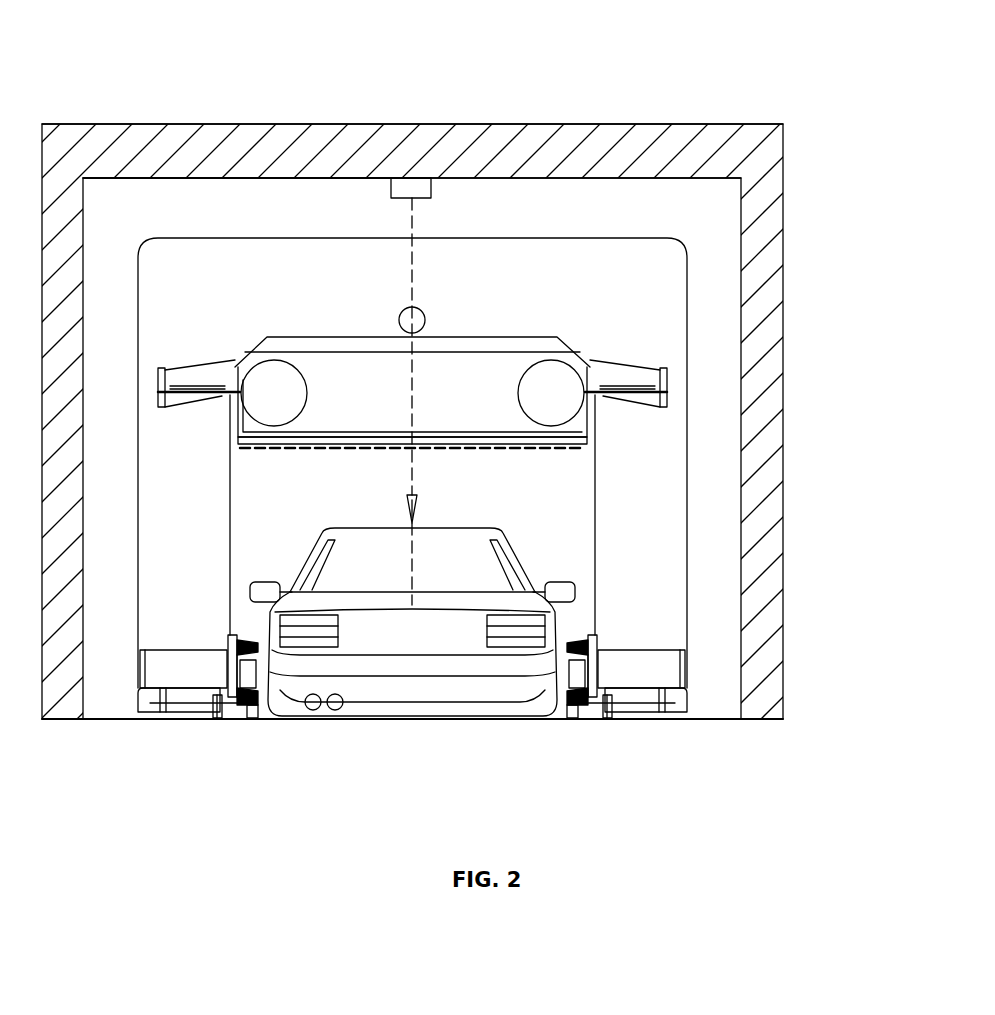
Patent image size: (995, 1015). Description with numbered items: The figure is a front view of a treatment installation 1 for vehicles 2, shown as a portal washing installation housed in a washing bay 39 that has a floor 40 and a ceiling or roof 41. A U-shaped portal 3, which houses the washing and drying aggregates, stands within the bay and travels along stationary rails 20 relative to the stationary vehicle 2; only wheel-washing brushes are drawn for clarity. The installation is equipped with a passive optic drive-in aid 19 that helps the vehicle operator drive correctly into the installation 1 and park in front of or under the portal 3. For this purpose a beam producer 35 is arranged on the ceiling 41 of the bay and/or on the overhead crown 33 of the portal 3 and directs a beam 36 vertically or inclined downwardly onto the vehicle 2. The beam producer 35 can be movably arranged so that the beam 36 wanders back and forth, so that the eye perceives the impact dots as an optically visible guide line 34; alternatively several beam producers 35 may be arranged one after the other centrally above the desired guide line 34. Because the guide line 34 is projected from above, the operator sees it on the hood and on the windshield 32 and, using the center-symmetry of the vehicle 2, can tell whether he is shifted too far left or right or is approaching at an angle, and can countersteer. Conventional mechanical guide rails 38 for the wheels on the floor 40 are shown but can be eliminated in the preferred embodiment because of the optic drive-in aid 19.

The treatment installation 1 is at (606, 97).
The vehicle 2 is at (412, 650).
The portal 3 is at (412, 375).
The optic drive-in aid 19 is at (355, 197).
The stationary rails 20 is at (612, 722).
The windshield 32 is at (477, 560).
The overhead crown 33 is at (283, 270).
The guide line 34 is at (410, 570).
The beam producer 35 is at (444, 255).
The beam 36 is at (413, 480).
The mechanical guide rails 38 is at (573, 722).
The washing bay 39 is at (160, 205).
The floor 40 is at (352, 722).
The ceiling 41 is at (503, 175).